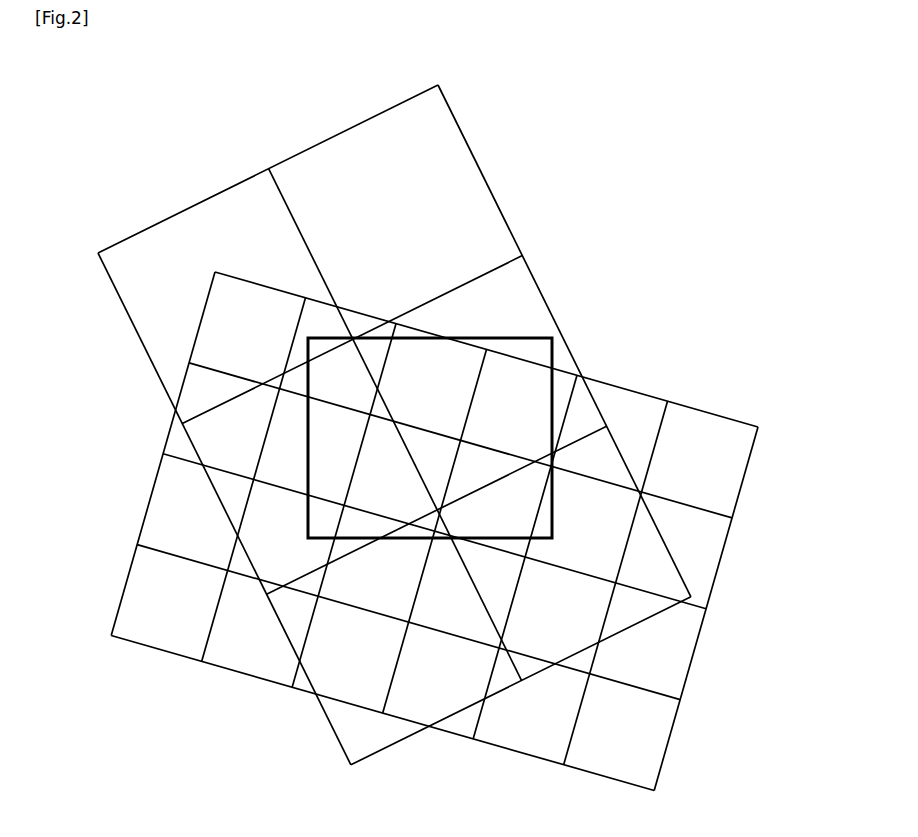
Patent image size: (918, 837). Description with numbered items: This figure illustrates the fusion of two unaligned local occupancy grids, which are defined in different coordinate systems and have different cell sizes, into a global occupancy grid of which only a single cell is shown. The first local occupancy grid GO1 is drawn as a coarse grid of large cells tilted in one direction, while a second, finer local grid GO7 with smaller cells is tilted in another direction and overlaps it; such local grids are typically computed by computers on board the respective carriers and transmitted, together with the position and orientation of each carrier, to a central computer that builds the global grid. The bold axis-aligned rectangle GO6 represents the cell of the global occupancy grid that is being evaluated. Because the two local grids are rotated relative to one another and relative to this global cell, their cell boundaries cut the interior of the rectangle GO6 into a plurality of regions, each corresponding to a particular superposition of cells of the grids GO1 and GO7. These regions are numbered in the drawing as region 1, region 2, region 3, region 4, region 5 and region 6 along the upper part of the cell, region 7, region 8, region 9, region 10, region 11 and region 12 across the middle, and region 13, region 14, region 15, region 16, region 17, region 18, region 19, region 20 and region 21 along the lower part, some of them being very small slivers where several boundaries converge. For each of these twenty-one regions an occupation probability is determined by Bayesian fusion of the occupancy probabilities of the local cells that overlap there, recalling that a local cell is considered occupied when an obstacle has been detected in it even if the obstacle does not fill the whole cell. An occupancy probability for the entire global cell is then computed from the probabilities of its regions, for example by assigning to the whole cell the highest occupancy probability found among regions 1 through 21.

The local occupancy grid GO1 is at (520, 253).
The grid object 6 (bounding rectangle) GO6 is at (553, 337).
The grid object 7 (rotated fine grid) GO7 is at (758, 427).
The region 1 is at (319, 347).
The region 2 is at (335, 375).
The region 3 is at (373, 350).
The region 4 is at (432, 375).
The region 5 is at (530, 350).
The region 6 is at (520, 398).
The region 7 is at (332, 442).
The region 8 is at (379, 407).
The region 9 is at (383, 465).
The region 10 is at (437, 460).
The region 11 is at (481, 468).
The region 12 is at (537, 453).
The region 13 is at (321, 520).
The region 14 is at (358, 525).
The region 15 is at (404, 532).
The region 16 is at (424, 515).
The region 17 is at (450, 508).
The region 18 is at (433, 530).
The region 19 is at (452, 528).
The region 20 is at (498, 508).
The region 21 is at (536, 523).